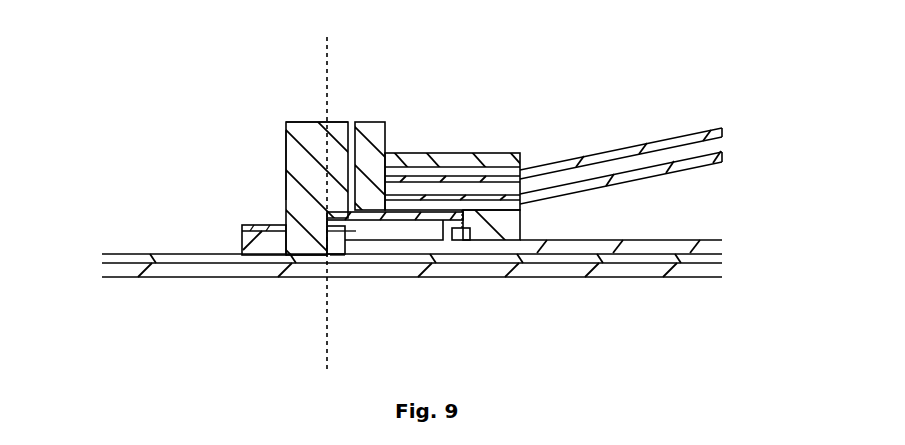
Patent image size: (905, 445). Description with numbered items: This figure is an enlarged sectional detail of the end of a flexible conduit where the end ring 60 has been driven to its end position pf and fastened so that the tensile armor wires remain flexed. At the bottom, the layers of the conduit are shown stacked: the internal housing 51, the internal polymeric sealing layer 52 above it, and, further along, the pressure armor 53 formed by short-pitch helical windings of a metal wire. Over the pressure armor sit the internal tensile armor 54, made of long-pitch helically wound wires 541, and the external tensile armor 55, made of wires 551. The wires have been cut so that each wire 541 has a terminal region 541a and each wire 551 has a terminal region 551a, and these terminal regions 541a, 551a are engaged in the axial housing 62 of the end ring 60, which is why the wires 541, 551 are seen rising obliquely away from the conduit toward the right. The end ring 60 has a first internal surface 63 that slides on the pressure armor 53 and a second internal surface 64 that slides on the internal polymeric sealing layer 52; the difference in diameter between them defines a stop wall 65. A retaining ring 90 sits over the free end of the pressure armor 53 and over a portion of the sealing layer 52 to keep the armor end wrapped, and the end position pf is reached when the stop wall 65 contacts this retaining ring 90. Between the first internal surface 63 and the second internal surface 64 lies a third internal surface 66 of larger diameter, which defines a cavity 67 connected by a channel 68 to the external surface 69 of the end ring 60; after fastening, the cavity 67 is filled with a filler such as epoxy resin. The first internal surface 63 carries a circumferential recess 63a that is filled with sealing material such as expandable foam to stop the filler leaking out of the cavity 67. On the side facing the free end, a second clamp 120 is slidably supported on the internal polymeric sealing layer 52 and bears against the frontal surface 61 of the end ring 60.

The internal housing 51 is at (160, 270).
The internal polymeric sealing layer 52 is at (175, 254).
The pressure armor 53 is at (720, 240).
The internal tensile armor 54 is at (723, 152).
The external tensile armor 55 is at (722, 128).
The wires of the internal tensile armor 541 is at (663, 168).
The wires of the external tensile armor 551 is at (595, 152).
The terminal region of the internal tensile armor wire 541a is at (430, 190).
The terminal region of the external tensile armor wire 551a is at (413, 172).
The end ring 60 is at (286, 121).
The frontal surface 61 is at (286, 162).
The axial housing 62 is at (480, 153).
The first internal surface 63 is at (490, 226).
The circumferential recess 63a is at (460, 241).
The second internal surface 64 is at (312, 262).
The stop wall 65 is at (350, 236).
The third internal surface 66 is at (395, 241).
The cavity 67 is at (418, 222).
The channel 68 is at (353, 122).
The external surface 69 is at (315, 122).
The retaining ring 90 is at (337, 263).
The second clamp 120 is at (246, 225).
The end position pf is at (328, 192).